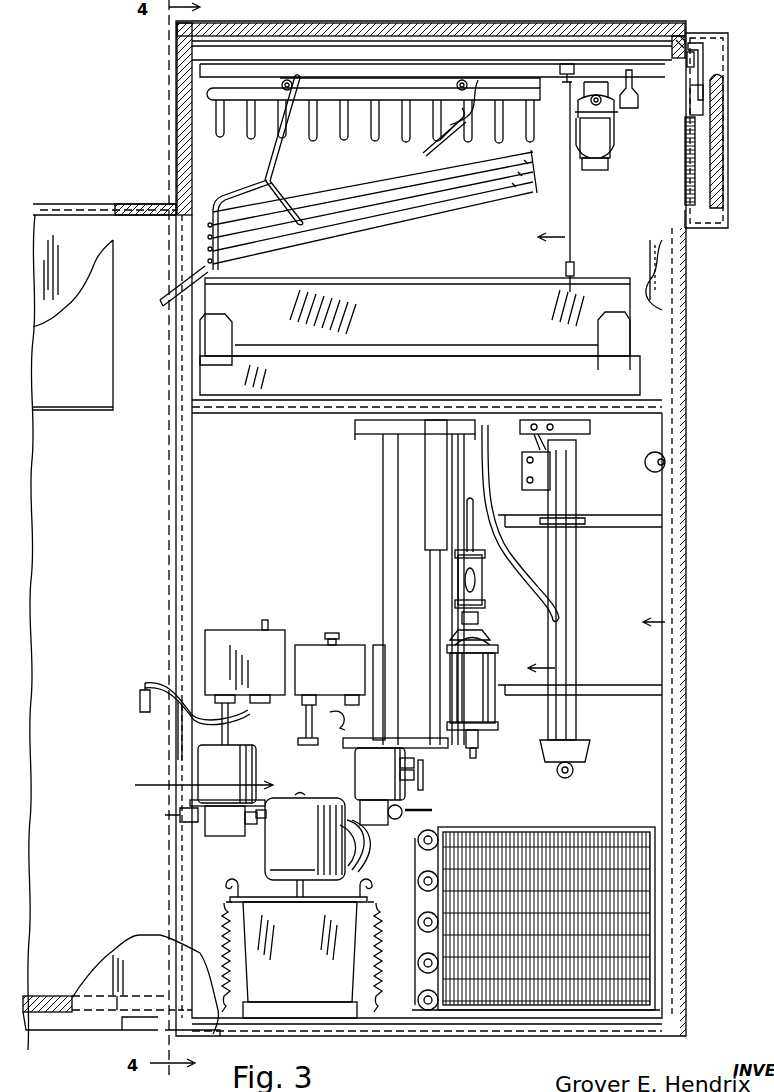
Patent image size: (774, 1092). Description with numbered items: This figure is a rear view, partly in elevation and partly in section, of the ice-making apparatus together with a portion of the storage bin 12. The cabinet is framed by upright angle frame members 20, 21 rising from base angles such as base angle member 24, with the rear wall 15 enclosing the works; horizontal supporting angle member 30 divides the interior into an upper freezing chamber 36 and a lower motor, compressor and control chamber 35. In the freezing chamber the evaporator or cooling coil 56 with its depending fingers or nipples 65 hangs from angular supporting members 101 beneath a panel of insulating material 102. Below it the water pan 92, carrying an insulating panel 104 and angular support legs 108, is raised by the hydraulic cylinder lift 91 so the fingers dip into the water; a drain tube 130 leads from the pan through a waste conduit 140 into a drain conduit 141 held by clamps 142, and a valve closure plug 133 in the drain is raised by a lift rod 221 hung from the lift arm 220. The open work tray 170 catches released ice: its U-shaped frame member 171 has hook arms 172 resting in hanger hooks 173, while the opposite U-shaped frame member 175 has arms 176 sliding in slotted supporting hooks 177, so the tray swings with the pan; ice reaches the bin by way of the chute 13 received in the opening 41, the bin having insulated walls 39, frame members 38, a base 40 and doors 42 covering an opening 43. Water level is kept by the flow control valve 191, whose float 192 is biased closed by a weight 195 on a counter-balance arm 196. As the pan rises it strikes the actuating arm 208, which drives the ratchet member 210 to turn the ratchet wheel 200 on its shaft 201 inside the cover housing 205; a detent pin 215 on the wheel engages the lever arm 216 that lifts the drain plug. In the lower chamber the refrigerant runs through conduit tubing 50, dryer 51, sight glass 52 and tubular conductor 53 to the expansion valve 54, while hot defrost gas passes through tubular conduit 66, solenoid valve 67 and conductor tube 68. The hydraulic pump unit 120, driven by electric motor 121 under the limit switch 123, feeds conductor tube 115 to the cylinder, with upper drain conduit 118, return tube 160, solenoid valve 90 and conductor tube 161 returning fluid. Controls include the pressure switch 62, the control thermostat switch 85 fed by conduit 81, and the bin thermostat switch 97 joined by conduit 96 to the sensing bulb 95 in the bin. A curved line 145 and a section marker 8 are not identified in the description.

The storage bin 12 is at (106, 556).
The angular supporting members 101 is at (300, 48).
The panel of insulating material 102 is at (348, 62).
The evaporator or cooling coil 56 is at (208, 92).
The depending fingers or nipples 65 is at (372, 135).
The elongate slotted supporting hooks 177 is at (270, 152).
The arms 176 is at (284, 195).
The U-shaped supporting frame member 175 is at (218, 212).
The hook arms 172 is at (425, 158).
The U-shaped hanger hooks 173 is at (470, 80).
The open work basket or tray 170 is at (385, 236).
The U-shaped frame member 171 is at (522, 196).
The elongate lift arm 220 is at (567, 80).
The lift rod 221 is at (571, 235).
The valve closure plunger or plug 133 is at (575, 270).
The float 192 is at (614, 128).
The counter-balance arm 196 is at (610, 148).
The weight 195 is at (608, 165).
The flow control valve 191 is at (590, 95).
The swingable actuating arm 208 is at (650, 62).
The shaft 201 is at (723, 136).
The elongate lever arm 216 is at (700, 78).
The detent pin 215 is at (703, 92).
The ratchet member 210 is at (703, 106).
The ratchet wheel 200 is at (695, 182).
The insulated cover housing 205 is at (728, 212).
The section line 8 is at (564, 455).
The water pan 92 is at (412, 287).
The insulating panel 104 is at (368, 318).
The angular support legs 108 is at (238, 330).
The chute 13 is at (160, 314).
The insulated walls 39 is at (78, 204).
The opening 41 is at (178, 240).
The doors 42 is at (86, 398).
The opening 43 is at (56, 400).
The upper freezing chamber 36 is at (660, 350).
The horizontal supporting angle member 30 is at (640, 410).
The upright angle frame member 20 is at (185, 760).
The sensing bulb 95 is at (138, 700).
The conduit 96 is at (180, 725).
The bin thermostat switch 97 is at (234, 636).
The control thermostat switch 85 is at (312, 645).
The conduit 81 is at (346, 728).
The pressure switch 62 is at (368, 640).
The hydraulic cylinder lift 91 is at (398, 468).
The drain tube 130 is at (570, 458).
The limit switch 123 is at (528, 465).
The waste conduit 140 is at (570, 565).
The clamps 142 is at (552, 770).
The drain conduit 141 is at (575, 772).
The expansion valve 54 is at (646, 466).
The lower motor, compressor and control chamber 35 is at (668, 622).
The hose 145 is at (514, 575).
The tubular conductor 53 is at (472, 512).
The sight glass 52 is at (485, 620).
The dryer 51 is at (490, 710).
The conduit tubing 50 is at (480, 742).
The drain or return tube 160 is at (178, 825).
The hydraulic pump control solenoid valve 90 is at (225, 836).
The electric motor 121 is at (275, 847).
The conductor tube 161 is at (266, 818).
The upper drain conduit 118 is at (362, 850).
The tubular conduit 66 is at (350, 790).
The conductor tube 115 is at (422, 782).
The conductor tube 68 is at (425, 812).
The solenoid valve 67 is at (385, 820).
The hydraulic pump unit 120 is at (315, 986).
The base 40 is at (650, 846).
The upright angle frame member 21 is at (672, 920).
The frame members 38 is at (49, 1024).
The rear wall 15 is at (206, 1034).
The base angle member 24 is at (372, 1034).